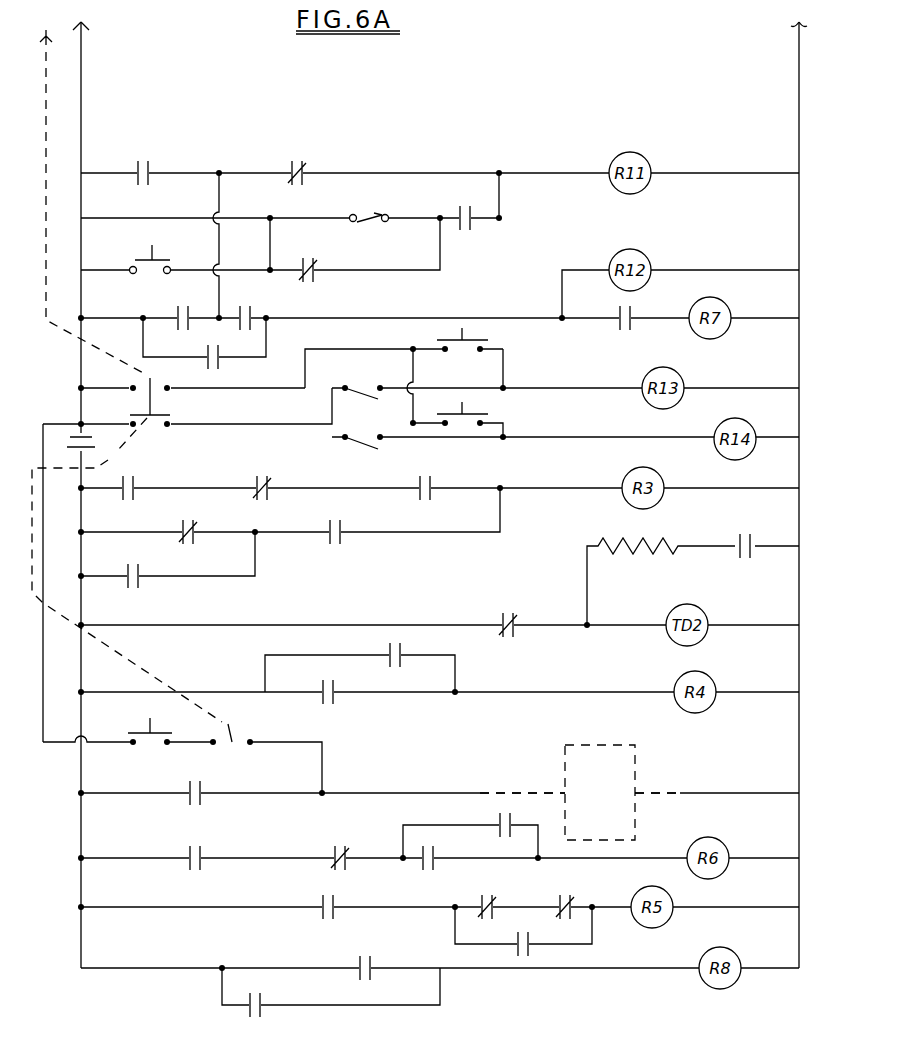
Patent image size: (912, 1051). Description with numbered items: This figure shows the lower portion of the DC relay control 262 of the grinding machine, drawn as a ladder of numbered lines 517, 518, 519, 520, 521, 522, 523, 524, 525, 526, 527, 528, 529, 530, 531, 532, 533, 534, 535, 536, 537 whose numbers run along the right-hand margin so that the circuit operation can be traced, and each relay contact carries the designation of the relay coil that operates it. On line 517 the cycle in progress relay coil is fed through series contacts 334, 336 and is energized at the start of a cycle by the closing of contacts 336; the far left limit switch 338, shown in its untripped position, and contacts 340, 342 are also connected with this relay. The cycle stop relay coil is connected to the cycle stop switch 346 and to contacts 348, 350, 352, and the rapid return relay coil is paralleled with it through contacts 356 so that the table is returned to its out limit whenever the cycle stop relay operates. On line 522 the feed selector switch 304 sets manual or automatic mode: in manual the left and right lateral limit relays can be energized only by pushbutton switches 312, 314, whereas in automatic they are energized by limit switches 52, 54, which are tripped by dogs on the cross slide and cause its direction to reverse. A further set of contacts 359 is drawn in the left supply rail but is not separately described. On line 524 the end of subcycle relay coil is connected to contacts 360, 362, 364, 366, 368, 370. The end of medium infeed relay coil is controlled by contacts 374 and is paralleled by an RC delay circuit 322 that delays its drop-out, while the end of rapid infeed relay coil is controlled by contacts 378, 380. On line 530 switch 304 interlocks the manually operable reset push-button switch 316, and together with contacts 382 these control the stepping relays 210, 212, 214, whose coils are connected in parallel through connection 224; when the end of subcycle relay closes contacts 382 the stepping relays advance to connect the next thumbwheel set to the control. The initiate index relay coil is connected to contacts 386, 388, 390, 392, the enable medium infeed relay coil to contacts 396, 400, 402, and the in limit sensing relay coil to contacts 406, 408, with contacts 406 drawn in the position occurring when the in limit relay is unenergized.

The DC relay control 262 is at (52, 382).
The feed selector switch 304 is at (170, 394).
The pushbutton switch 312 is at (476, 344).
The pushbutton switch 314 is at (476, 418).
The reset push-button switch 316 is at (136, 732).
The RC delay circuit 322 is at (708, 543).
The contacts 334 is at (305, 169).
The contacts 336 is at (152, 171).
The far left limit switch 338 is at (378, 213).
The contacts 340 is at (315, 277).
The contacts 342 is at (472, 226).
The cycle stop switch 346 is at (141, 264).
The contacts 348 is at (178, 308).
The contacts 350 is at (222, 362).
The contacts 352 is at (256, 312).
The contacts 356 is at (618, 326).
The contact R9 359 is at (70, 434).
The contacts 360 is at (138, 483).
The contacts 362 is at (272, 483).
The contacts 364 is at (436, 483).
The contacts 366 is at (197, 527).
The contacts 368 is at (345, 527).
The contacts 370 is at (143, 572).
The contacts 374 is at (498, 620).
The contacts 378 is at (338, 701).
The contacts 380 is at (402, 664).
The contacts 382 is at (206, 788).
The contacts 386 is at (490, 812).
The contacts 388 is at (441, 867).
The contacts 390 is at (348, 848).
The contacts 392 is at (206, 853).
The contacts 396 is at (572, 902).
The contacts 400 is at (478, 908).
The contacts 402 is at (336, 900).
The contacts 406 is at (374, 966).
The contacts 408 is at (264, 1011).
The limit switch 52 is at (364, 390).
The limit switch 54 is at (354, 434).
The stepping relay 210 is at (666, 789).
The stepping relay 212 is at (666, 789).
The stepping relay 214 is at (637, 748).
The connection 224 is at (530, 791).
The line 517 is at (467, 173).
The line 518 is at (467, 202).
The line 519 is at (467, 268).
The line 520 is at (467, 318).
The line 521 is at (579, 362).
The line 522 is at (467, 388).
The line 523 is at (448, 420).
The line 524 is at (467, 488).
The line 525 is at (720, 579).
The line 526 is at (467, 562).
The line 527 is at (467, 625).
The line 528 is at (559, 670).
The line 529 is at (467, 692).
The line 530 is at (448, 761).
The line 531 is at (467, 793).
The line 532 is at (628, 837).
The line 533 is at (467, 858).
The line 534 is at (467, 907).
The line 535 is at (654, 931).
The line 536 is at (467, 968).
The line 537 is at (538, 989).